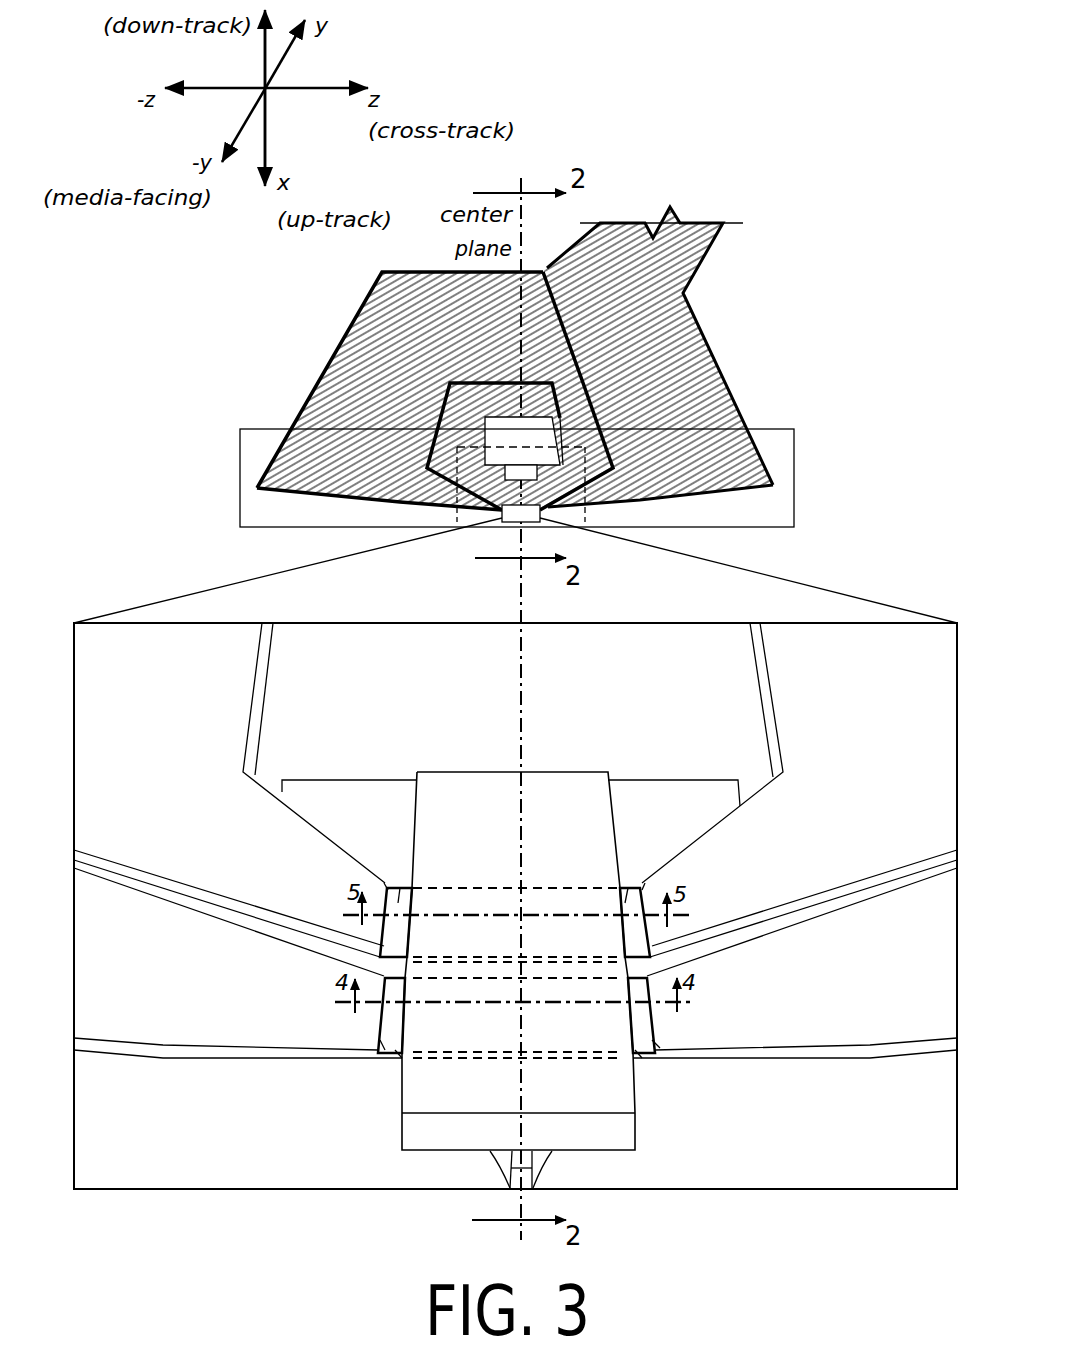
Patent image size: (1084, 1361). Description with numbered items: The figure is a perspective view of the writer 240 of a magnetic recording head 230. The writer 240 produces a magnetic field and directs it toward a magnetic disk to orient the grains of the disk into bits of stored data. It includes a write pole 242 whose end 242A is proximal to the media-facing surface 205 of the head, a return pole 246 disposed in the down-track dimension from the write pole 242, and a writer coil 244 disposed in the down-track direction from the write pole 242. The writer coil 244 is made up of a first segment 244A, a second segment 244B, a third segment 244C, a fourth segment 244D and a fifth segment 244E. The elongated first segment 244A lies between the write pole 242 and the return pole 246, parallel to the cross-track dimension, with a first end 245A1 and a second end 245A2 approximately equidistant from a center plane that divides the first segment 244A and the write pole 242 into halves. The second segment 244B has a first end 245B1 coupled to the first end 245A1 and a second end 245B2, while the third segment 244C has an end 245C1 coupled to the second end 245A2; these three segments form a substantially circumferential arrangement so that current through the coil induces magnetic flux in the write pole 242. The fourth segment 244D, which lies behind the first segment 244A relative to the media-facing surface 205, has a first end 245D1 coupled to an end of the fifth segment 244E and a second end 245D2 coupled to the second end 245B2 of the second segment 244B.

The media-facing surface 205 is at (270, 510).
The magnetic recording head 230 is at (705, 130).
The writer 240 is at (762, 295).
The write pole 242 is at (370, 820).
The write pole tip 242A is at (535, 1160).
The writer coil 244 is at (689, 507).
The first segment 244A is at (498, 1045).
The second segment 244B is at (427, 390).
The third segment 244C is at (688, 390).
The fourth segment 244D is at (500, 955).
The fifth segment 244E is at (490, 400).
The first end of first segment 245A1 is at (390, 1033).
The second end of first segment 245A2 is at (647, 1058).
The first end of second segment 245B1 is at (363, 1027).
The second end of second segment 245B2 is at (650, 887).
The end of third segment 245C1 is at (667, 1027).
The first end of fourth segment 245D1 is at (398, 903).
The second end of fourth segment 245D2 is at (625, 903).
The return pole 246 is at (485, 820).